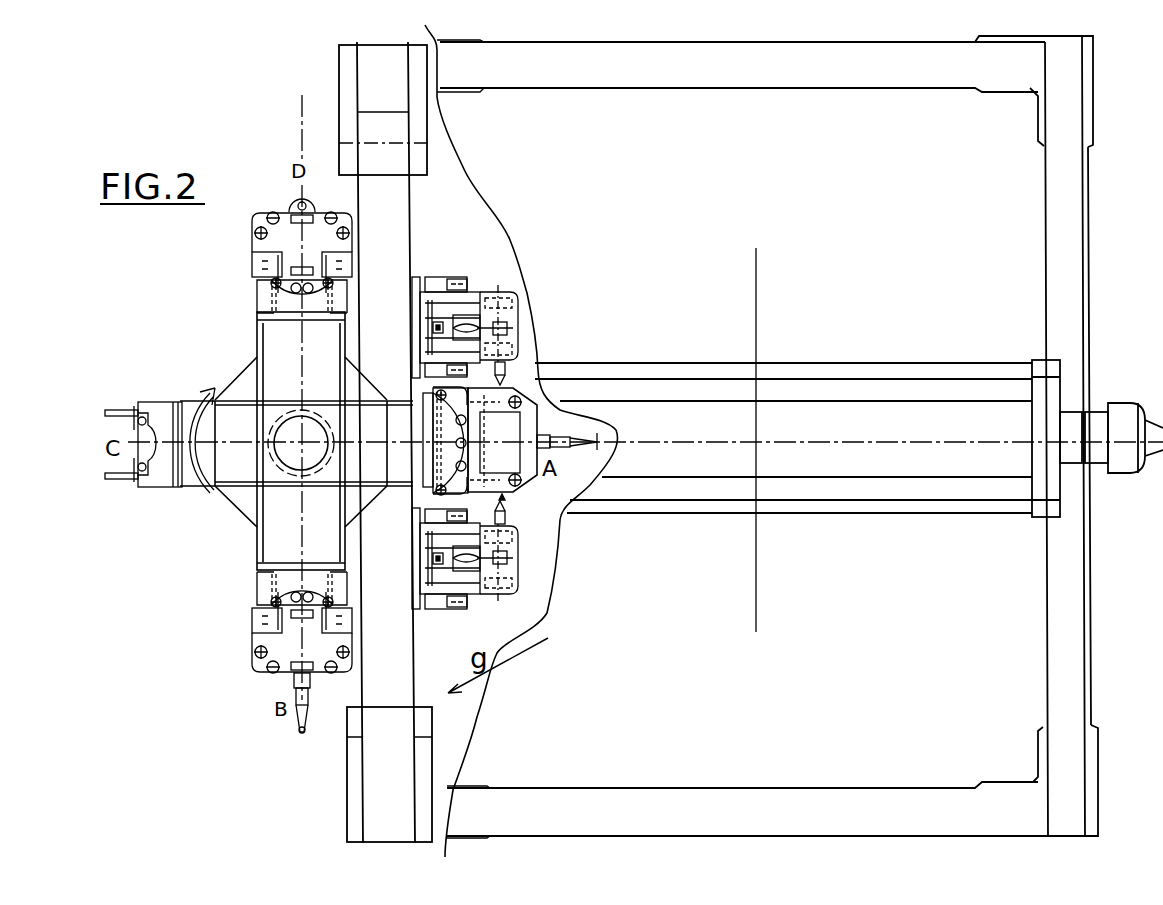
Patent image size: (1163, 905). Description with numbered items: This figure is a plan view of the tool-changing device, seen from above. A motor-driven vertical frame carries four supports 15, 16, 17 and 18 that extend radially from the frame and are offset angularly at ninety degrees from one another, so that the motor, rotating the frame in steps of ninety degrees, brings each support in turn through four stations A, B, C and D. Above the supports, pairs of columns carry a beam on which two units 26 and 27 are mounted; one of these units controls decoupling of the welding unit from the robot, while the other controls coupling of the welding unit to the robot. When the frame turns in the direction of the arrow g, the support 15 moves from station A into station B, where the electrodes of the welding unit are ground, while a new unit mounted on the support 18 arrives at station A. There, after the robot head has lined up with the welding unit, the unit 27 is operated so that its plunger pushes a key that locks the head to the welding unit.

The support 15 is at (423, 410).
The support 16 is at (272, 587).
The support 17 is at (133, 404).
The support 18 is at (337, 293).
The unit 26 is at (518, 330).
The unit 27 is at (522, 557).